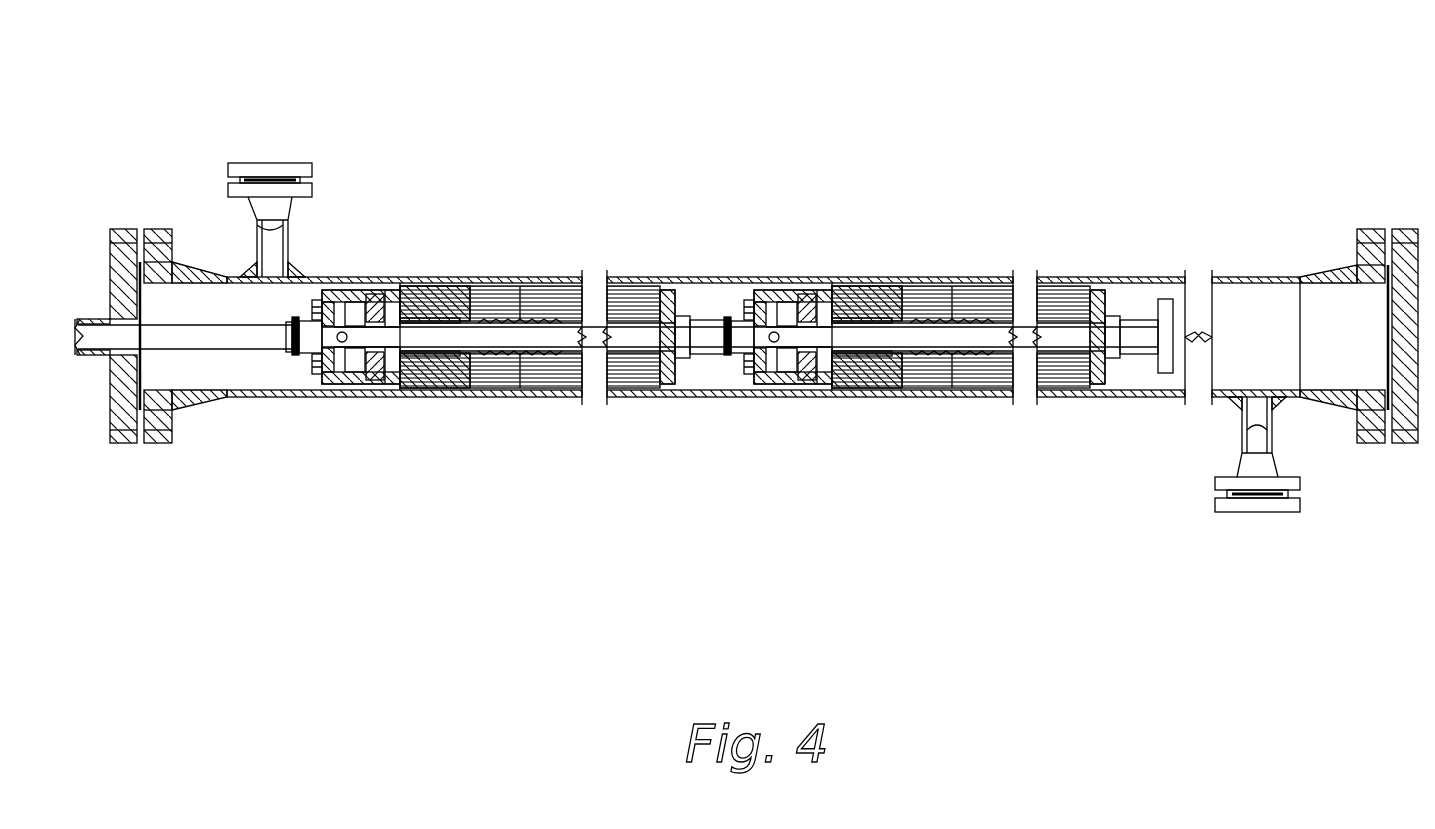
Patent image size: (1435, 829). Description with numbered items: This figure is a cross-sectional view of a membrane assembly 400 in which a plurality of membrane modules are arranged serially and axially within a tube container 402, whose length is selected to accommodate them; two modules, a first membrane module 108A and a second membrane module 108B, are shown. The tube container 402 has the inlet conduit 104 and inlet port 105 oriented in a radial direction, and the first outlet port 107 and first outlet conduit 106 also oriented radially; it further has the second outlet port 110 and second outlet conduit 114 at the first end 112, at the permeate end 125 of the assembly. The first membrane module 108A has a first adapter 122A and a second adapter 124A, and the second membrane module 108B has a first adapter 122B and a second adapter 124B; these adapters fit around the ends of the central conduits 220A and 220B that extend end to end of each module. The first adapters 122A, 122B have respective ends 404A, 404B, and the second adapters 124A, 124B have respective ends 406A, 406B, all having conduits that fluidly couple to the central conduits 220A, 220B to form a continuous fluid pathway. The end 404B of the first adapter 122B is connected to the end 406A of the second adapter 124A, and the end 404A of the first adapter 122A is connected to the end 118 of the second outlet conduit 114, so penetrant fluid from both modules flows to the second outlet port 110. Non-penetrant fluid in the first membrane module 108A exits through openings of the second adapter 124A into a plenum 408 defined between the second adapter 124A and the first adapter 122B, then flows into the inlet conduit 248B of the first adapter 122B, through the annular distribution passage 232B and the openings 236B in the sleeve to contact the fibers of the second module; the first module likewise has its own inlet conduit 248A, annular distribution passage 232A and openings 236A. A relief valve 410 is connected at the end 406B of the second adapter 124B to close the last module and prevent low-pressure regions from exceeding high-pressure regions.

The membrane assembly 400 is at (1213, 83).
The inlet conduit 104 is at (274, 163).
The inlet port 105 is at (266, 284).
The first outlet conduit 106 is at (1262, 512).
The first outlet port 107 is at (1252, 392).
The first membrane module 108A is at (512, 305).
The second membrane module 108B is at (943, 305).
The second outlet port 110 is at (95, 328).
The first end 112 is at (118, 445).
The second outlet conduit 114 is at (170, 326).
The end of the second outlet conduit 118 is at (290, 352).
The first adapter 122A is at (360, 290).
The first adapter 122B is at (793, 303).
The second adapter 124A is at (662, 388).
The second adapter 124B is at (1108, 300).
The permeate end 125 is at (143, 458).
The central conduit 220A is at (572, 360).
The central conduit 220B is at (963, 388).
The annular distribution passage 232A is at (443, 305).
The annular distribution passage 232B is at (922, 306).
The openings in the sleeve 236A is at (492, 365).
The openings in the sleeve 236B is at (922, 387).
The inlet conduit of the first adapter 248A is at (378, 380).
The inlet conduit of the first adapter 248B is at (834, 375).
The tube container 402 is at (717, 283).
The end of the first adapter 404A is at (300, 355).
The end of the first adapter 404B is at (762, 387).
The end of the second adapter 406A is at (718, 358).
The end of the second adapter 406B is at (1153, 355).
The plenum 408 is at (702, 288).
The relief valve 410 is at (1170, 290).